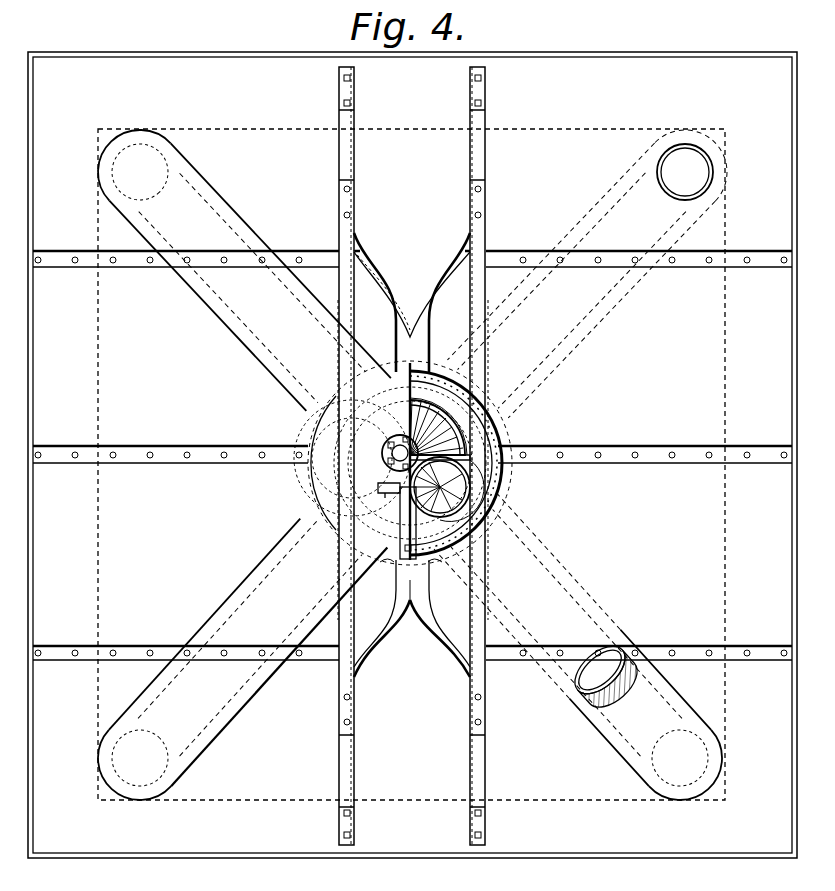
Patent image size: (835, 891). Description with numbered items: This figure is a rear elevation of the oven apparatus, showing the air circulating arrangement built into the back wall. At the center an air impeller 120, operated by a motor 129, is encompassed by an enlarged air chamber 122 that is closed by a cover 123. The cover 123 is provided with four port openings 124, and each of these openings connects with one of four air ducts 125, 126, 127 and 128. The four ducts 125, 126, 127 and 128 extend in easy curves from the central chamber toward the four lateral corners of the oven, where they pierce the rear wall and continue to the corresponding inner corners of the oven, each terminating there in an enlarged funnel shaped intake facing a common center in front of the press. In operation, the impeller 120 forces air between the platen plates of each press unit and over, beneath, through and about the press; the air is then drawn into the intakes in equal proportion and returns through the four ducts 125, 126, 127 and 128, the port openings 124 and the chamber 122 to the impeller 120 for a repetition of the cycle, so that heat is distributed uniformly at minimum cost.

The air impeller 120 is at (430, 423).
The air chamber 122 is at (443, 392).
The cover 123 is at (480, 473).
The port openings 124 is at (458, 500).
The air duct 125 is at (236, 274).
The air duct 126 is at (234, 654).
The air duct 127 is at (592, 697).
The air duct 128 is at (595, 265).
The motor 129 is at (383, 466).